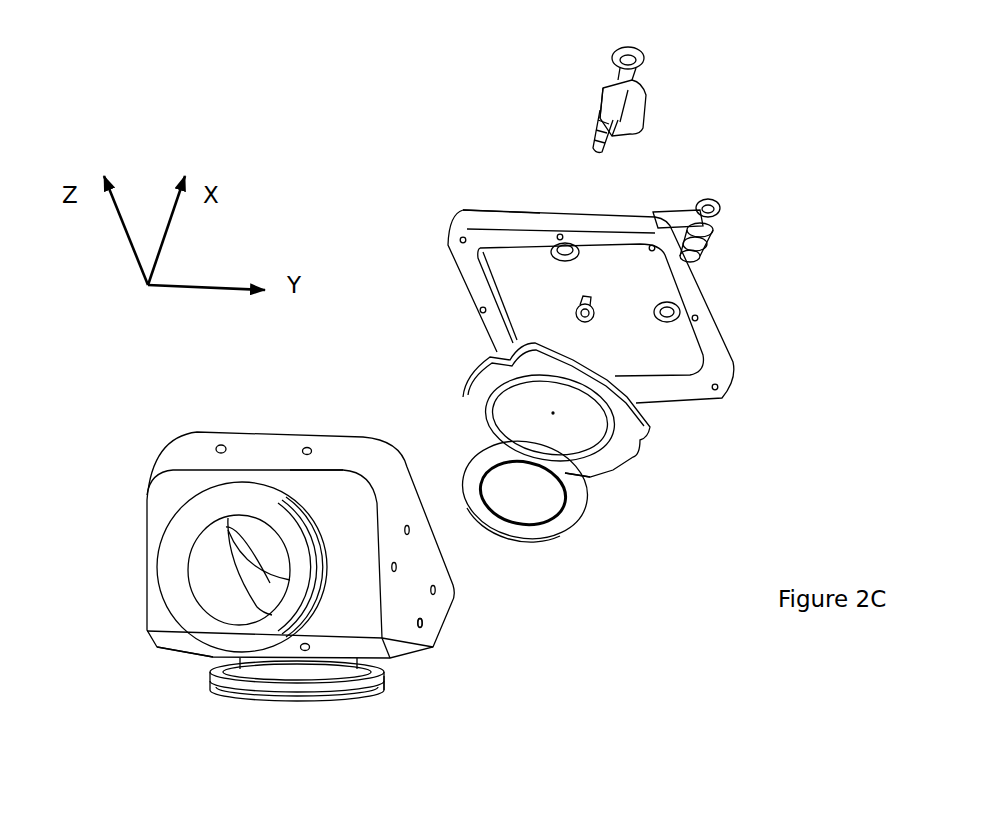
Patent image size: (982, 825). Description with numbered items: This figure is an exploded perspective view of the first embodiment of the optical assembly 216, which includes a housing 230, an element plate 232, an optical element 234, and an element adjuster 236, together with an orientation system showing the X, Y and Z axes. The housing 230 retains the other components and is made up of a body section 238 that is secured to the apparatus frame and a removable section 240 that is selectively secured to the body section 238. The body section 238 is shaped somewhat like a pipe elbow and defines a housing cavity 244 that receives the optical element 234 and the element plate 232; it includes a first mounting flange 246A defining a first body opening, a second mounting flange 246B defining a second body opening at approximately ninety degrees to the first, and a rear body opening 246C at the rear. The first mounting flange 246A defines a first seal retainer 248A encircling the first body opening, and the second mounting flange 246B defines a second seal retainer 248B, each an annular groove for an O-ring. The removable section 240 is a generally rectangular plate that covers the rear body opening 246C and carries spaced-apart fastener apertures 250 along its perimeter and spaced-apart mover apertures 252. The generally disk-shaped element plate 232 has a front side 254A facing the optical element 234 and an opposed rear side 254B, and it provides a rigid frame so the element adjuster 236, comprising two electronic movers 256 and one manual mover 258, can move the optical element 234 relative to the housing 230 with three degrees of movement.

The optical assembly 216 is at (345, 252).
The housing 230 is at (172, 455).
The element plate 232 is at (638, 453).
The optical element 234 is at (555, 513).
The element adjuster 236 is at (650, 100).
The body section 238 is at (433, 620).
The removable section 240 is at (723, 378).
The housing cavity 244 is at (210, 588).
The first mounting flange 246A is at (237, 620).
The second mounting flange 246B is at (310, 703).
The rear body opening 246C is at (272, 573).
The first seal retainer 248A is at (297, 500).
The second seal retainer 248B is at (380, 682).
The fastener apertures 250 is at (473, 230).
The mover apertures 252 is at (678, 318).
The front side 254A is at (615, 465).
The rear side 254B is at (660, 405).
The electronic movers 256 is at (600, 88).
The manual mover 258 is at (587, 304).